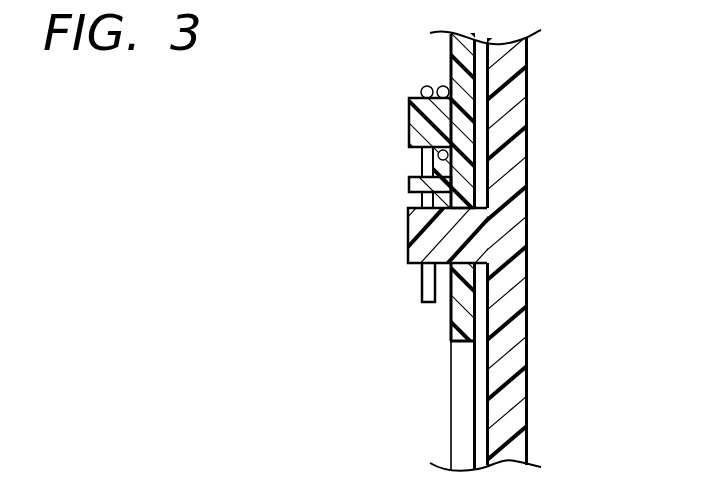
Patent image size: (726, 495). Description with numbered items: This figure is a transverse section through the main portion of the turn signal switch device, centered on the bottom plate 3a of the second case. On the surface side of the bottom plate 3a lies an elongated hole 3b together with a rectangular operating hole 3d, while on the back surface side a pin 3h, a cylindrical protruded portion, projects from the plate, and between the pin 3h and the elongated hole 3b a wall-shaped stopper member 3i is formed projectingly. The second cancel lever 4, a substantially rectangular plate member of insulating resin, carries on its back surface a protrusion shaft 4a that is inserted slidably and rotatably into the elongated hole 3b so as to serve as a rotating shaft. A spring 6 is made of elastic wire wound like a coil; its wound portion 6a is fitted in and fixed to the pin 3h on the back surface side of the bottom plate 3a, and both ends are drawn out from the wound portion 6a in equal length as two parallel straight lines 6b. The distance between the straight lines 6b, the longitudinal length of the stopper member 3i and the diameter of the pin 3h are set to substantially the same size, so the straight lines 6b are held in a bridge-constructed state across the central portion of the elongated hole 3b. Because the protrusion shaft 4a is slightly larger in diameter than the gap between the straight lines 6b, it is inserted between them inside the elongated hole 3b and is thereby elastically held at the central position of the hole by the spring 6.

The pin 3h is at (437, 120).
The spring 6 is at (418, 161).
The wound portion 6a is at (424, 86).
The wall-shaped stopper member 3i is at (408, 188).
The elongated hole 3b is at (458, 208).
The protrusion shaft 4a is at (438, 237).
The straight lines 6b is at (421, 289).
The bottom plate 3a is at (458, 318).
The rectangular operating hole 3d is at (462, 413).
The second cancel lever 4 is at (528, 327).